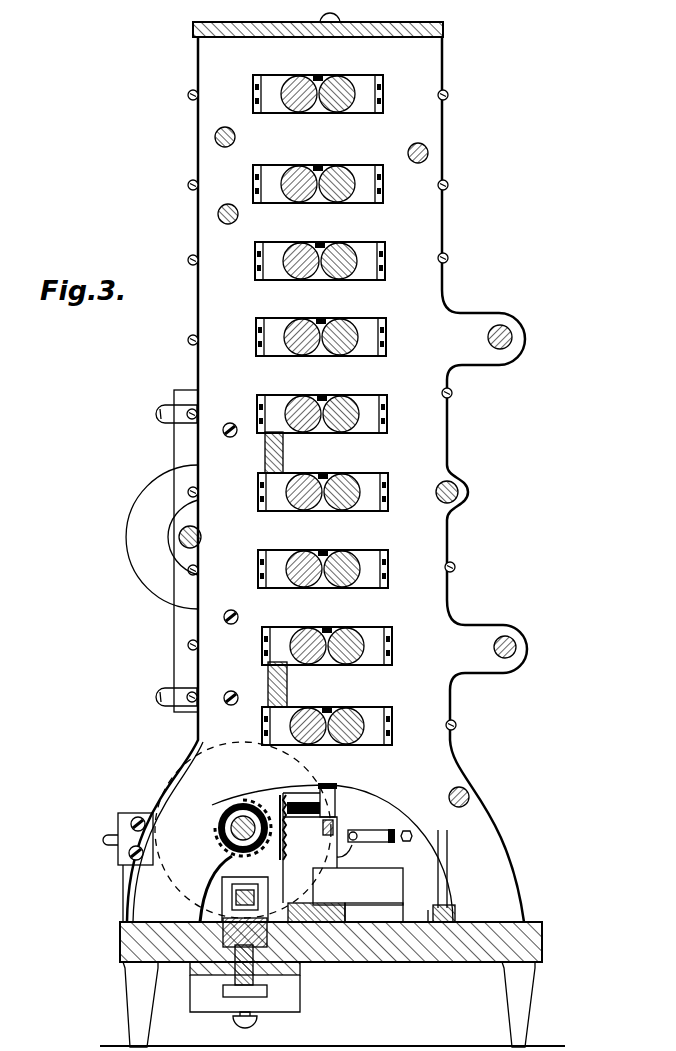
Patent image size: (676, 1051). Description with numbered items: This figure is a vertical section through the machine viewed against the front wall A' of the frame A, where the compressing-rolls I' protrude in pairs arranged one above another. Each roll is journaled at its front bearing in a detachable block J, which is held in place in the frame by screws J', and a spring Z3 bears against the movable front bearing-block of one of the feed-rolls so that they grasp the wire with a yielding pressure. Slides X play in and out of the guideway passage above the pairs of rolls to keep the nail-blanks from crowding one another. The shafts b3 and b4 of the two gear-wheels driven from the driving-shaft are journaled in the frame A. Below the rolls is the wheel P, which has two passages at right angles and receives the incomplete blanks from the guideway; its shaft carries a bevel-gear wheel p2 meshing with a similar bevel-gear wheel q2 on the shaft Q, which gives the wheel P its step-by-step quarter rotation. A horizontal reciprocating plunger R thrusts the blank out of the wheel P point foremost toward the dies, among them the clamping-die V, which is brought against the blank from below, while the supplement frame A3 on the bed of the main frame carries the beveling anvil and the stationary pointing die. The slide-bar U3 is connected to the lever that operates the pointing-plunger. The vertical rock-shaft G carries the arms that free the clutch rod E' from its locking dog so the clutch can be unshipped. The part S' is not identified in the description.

The frame A is at (332, 530).
The front wall A' is at (322, 401).
The supplement frame A3 is at (358, 886).
The detachable blocks J is at (318, 184).
The screws J' is at (314, 185).
The spring Z3 is at (383, 92).
The slides X is at (322, 319).
The compressing-rolls I' is at (323, 492).
The slide-bar U3 is at (178, 445).
The disk S' is at (162, 537).
The shaft b3 is at (199, 537).
The shaft b4 is at (459, 492).
The shaft Q is at (231, 822).
The bevel-gear wheel q2 is at (222, 858).
The clamping-die V is at (224, 886).
The bevel-gear wheel p2 is at (278, 840).
The wheel P is at (336, 798).
The plunger R is at (332, 826).
The vertical rock-shaft G is at (437, 878).
The rod or bar E' is at (429, 907).